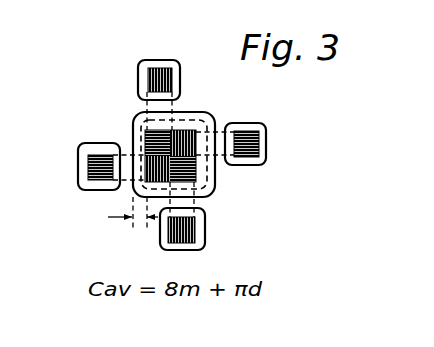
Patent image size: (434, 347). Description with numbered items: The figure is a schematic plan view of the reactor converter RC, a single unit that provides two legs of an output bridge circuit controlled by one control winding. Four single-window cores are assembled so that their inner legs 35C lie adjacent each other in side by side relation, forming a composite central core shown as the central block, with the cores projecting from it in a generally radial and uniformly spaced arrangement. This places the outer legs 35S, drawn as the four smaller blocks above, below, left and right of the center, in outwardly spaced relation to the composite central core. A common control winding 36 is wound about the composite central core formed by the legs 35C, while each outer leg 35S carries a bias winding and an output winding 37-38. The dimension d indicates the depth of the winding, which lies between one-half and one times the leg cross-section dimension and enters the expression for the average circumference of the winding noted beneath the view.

The reactor converter RC is at (128, 116).
The control winding 36 is at (214, 118).
The inner leg 35C is at (160, 130).
The outer leg 35S is at (148, 72).
The bias winding and output winding 37-38 is at (267, 133).
The depth of the winding d is at (134, 215).